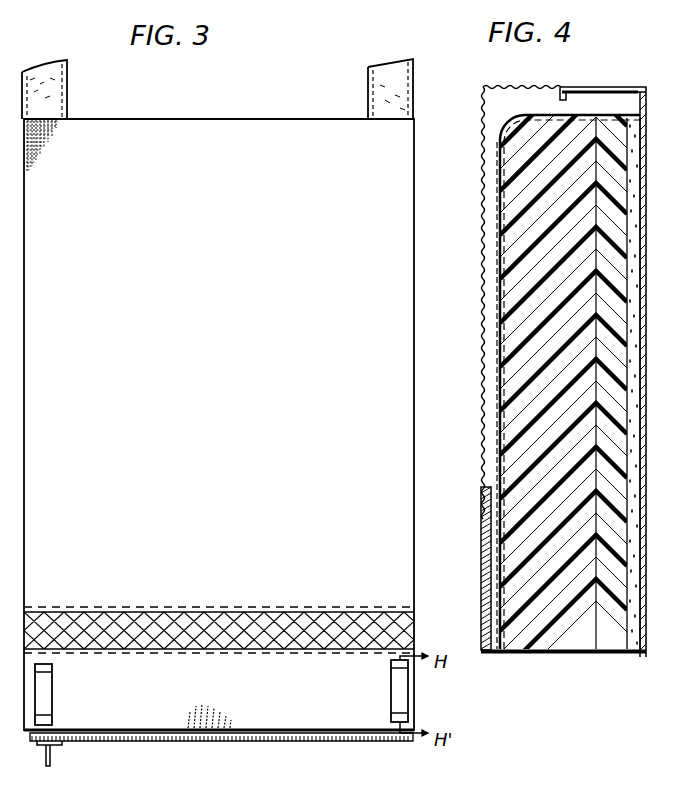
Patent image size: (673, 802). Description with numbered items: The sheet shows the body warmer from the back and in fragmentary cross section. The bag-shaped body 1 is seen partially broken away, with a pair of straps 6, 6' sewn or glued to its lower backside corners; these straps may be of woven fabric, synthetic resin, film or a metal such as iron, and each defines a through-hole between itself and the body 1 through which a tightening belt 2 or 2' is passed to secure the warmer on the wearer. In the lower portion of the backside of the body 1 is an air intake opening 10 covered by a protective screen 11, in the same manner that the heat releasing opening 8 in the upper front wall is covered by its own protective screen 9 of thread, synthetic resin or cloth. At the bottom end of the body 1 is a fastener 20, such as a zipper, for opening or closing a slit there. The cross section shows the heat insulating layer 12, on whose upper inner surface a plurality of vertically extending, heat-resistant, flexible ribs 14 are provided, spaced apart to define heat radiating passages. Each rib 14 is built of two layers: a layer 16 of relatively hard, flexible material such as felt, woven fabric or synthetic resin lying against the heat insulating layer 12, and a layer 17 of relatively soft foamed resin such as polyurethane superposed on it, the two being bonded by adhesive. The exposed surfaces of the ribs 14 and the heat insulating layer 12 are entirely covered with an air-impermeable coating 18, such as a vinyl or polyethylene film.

In FIG. 3, the body 1 is at (227, 126).
In FIG. 4, the body 1 is at (481, 541).
In FIG. 3, the tightening belt 2 is at (370, 89).
In FIG. 3, the tightening belt 2' is at (60, 89).
In FIG. 3, the strap 6 is at (54, 694).
In FIG. 3, the strap 6' is at (375, 691).
In FIG. 3, the air intake opening 10 is at (178, 621).
In FIG. 3, the protective screen 11 is at (245, 622).
In FIG. 3, the fastener 20 is at (217, 742).
In FIG. 4, the ribs 14 is at (548, 118).
In FIG. 4, the layer of relatively soft foamed resin material 17 is at (506, 207).
In FIG. 4, the heat releasing opening 8 is at (490, 243).
In FIG. 4, the protective screen 9 is at (483, 287).
In FIG. 4, the air-impermeable coating 18 is at (497, 331).
In FIG. 4, the layer of relatively hard, flexible material 16 is at (600, 403).
In FIG. 4, the heat insulating layer 12 is at (625, 437).